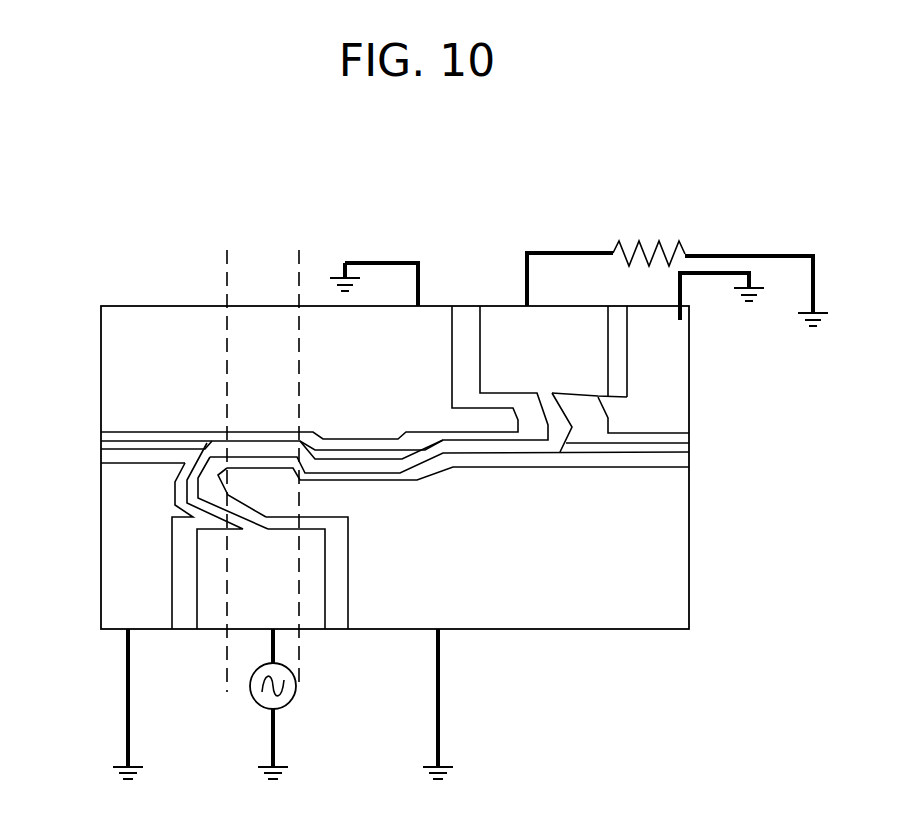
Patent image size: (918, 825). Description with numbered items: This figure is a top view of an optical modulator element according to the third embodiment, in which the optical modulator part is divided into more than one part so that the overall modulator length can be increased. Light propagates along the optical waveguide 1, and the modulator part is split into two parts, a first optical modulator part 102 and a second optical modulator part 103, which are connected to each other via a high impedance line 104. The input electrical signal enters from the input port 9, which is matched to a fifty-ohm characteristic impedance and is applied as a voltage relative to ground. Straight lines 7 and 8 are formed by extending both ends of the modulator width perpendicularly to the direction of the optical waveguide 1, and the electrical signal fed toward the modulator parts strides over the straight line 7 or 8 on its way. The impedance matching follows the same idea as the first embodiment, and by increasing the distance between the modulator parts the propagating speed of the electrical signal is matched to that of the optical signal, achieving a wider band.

The optical waveguide 1 is at (138, 440).
The straight line 7 is at (228, 458).
The straight line 8 is at (299, 455).
The input port 9 is at (243, 613).
The first optical modulator part 102 is at (278, 450).
The second optical modulator part 103 is at (542, 455).
The signal line 104 is at (365, 466).